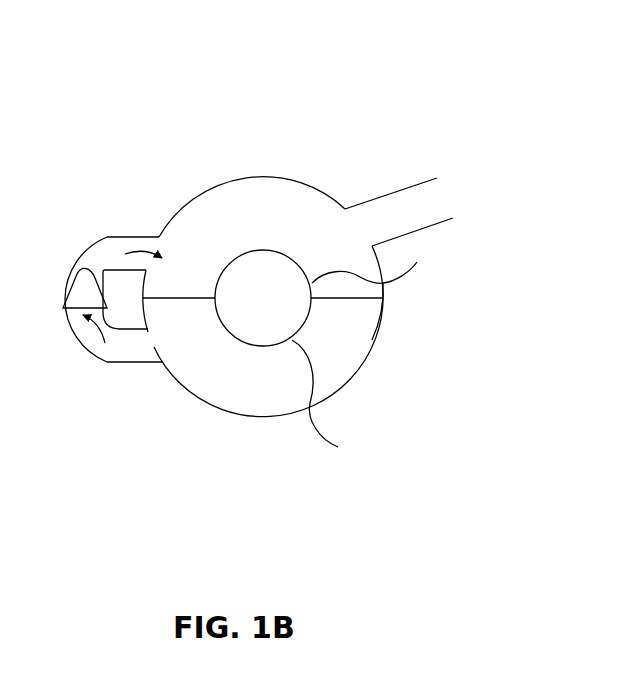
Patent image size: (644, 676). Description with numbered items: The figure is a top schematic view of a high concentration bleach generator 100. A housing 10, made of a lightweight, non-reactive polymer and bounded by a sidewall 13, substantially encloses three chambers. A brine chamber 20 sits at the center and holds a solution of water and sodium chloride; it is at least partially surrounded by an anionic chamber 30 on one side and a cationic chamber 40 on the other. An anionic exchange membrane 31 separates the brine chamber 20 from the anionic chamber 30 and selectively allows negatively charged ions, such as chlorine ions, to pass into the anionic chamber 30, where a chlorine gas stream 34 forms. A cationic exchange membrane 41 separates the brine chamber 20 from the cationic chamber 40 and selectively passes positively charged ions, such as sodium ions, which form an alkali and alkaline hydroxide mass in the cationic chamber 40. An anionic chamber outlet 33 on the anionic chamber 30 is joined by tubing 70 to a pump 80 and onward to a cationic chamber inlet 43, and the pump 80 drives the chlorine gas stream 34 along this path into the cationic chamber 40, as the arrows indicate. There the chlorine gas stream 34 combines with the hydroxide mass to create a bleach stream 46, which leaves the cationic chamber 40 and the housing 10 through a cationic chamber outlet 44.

The high concentration bleach generator 100 is at (210, 68).
The housing 10 is at (351, 392).
The sidewall 13 is at (383, 313).
The brine chamber 20 is at (251, 308).
The anionic chamber 30 is at (251, 391).
The anionic exchange membrane 31 is at (328, 399).
The anionic chamber outlet 33 is at (155, 363).
The chlorine gas stream 34 is at (122, 301).
The cationic chamber 40 is at (251, 225).
The cationic exchange membrane 41 is at (374, 261).
The cationic chamber inlet 43 is at (138, 243).
The cationic chamber outlet 44 is at (395, 198).
The bleach stream 46 is at (450, 198).
The tubing 70 is at (78, 248).
The pump 80 is at (66, 300).